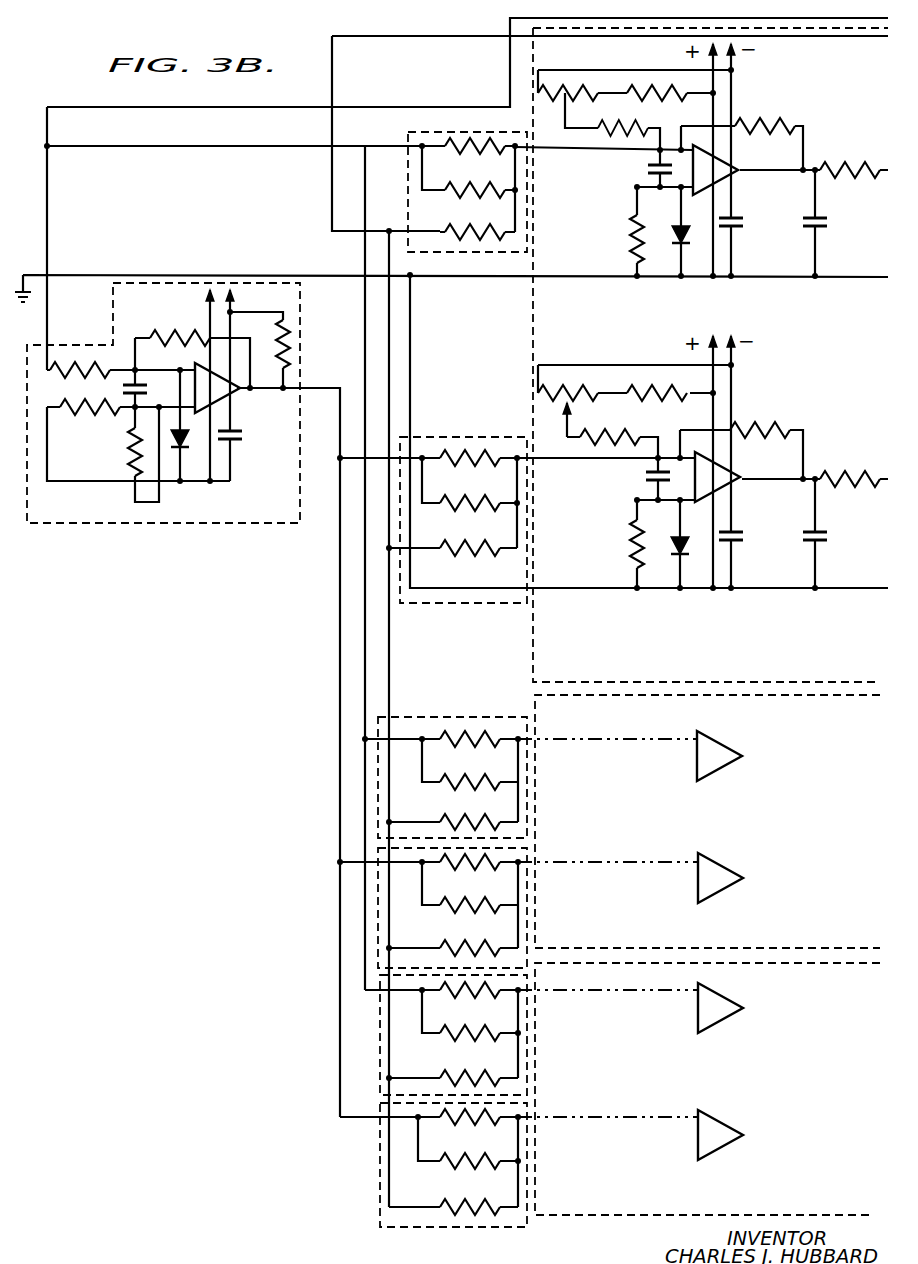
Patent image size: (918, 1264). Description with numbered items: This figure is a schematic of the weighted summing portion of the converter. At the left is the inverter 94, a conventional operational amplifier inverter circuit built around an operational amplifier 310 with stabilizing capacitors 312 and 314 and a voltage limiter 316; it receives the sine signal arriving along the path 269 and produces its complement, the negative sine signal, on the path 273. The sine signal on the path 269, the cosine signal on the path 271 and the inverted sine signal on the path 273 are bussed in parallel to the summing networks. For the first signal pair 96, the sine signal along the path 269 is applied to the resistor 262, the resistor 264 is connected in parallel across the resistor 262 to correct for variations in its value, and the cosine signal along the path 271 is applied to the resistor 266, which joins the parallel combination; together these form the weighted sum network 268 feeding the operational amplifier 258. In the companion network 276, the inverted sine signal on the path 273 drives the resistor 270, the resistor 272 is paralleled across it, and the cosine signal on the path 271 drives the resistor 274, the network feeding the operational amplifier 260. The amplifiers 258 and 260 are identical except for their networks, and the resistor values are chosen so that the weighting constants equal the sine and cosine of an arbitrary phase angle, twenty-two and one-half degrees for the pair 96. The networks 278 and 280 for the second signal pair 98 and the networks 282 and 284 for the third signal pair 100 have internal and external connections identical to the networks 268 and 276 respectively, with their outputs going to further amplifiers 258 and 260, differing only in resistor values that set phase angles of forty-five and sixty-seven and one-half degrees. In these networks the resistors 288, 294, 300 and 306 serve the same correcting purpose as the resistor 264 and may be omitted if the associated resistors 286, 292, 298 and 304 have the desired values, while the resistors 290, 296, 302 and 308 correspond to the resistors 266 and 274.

The inverter 94 is at (200, 523).
The signal pair 96 is at (752, 352).
The signal pair 98 is at (725, 817).
The signal pair 100 is at (720, 1077).
The operational amplifier 258 is at (739, 170).
The operational amplifier 260 is at (742, 482).
The resistor 262 is at (483, 155).
The resistor 264 is at (463, 194).
The resistor 266 is at (466, 240).
The weighted sum network 268 is at (408, 132).
The path 269 is at (153, 146).
The resistor 270 is at (455, 468).
The path 271 is at (332, 190).
The resistor 272 is at (476, 500).
The path 273 is at (322, 390).
The resistor 274 is at (480, 548).
The weighted summing network 276 is at (476, 437).
The summing network 278 is at (463, 717).
The summing network 280 is at (378, 928).
The summing network 282 is at (380, 1039).
The summing network 284 is at (380, 1166).
The resistor 286 is at (460, 750).
The resistor 288 is at (460, 792).
The resistor 290 is at (447, 822).
The resistor 292 is at (480, 862).
The resistor 294 is at (470, 914).
The resistor 296 is at (447, 946).
The resistor 298 is at (466, 994).
The resistor 300 is at (460, 1038).
The resistor 302 is at (447, 1076).
The resistor 304 is at (468, 1118).
The resistor 306 is at (468, 1162).
The resistor 308 is at (465, 1212).
The operational amplifier 310 is at (237, 388).
The stabilizing capacitor 312 is at (125, 396).
The stabilizing capacitor 314 is at (243, 434).
The voltage limiter 316 is at (190, 440).